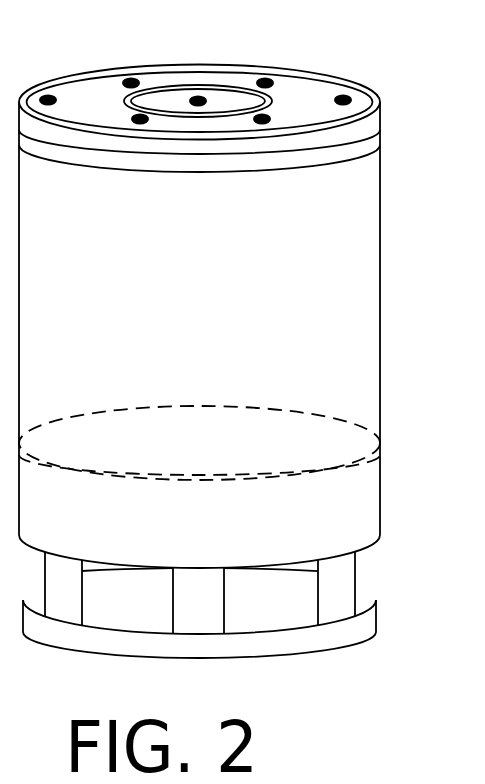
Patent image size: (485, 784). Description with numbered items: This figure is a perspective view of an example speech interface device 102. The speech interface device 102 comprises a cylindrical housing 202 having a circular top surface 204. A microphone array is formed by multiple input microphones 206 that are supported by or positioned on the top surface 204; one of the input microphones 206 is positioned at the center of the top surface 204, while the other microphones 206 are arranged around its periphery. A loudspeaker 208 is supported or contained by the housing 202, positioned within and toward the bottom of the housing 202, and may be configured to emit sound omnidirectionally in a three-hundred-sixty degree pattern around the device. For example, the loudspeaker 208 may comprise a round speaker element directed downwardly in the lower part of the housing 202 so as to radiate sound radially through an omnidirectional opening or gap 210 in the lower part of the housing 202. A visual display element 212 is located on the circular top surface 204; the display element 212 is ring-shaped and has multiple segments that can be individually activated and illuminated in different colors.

The speech interface device 102 is at (242, 351).
The cylindrical housing 202 is at (330, 215).
The circular top surface 204 is at (372, 100).
The input microphones 206 is at (138, 116).
The loudspeaker 208 is at (367, 460).
The omnidirectional opening or gap 210 is at (262, 605).
The visual display element 212 is at (201, 86).